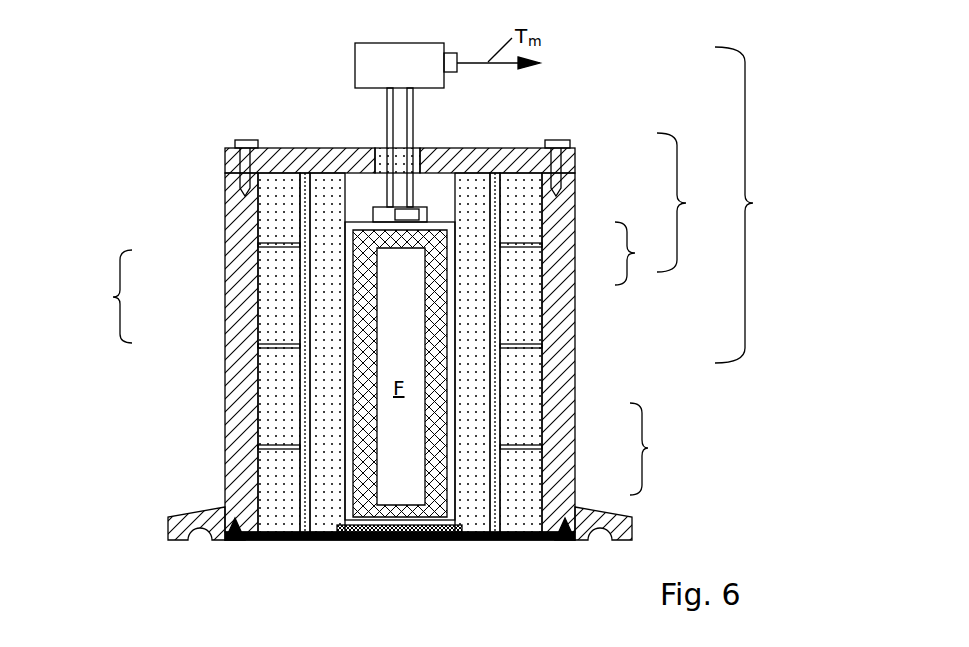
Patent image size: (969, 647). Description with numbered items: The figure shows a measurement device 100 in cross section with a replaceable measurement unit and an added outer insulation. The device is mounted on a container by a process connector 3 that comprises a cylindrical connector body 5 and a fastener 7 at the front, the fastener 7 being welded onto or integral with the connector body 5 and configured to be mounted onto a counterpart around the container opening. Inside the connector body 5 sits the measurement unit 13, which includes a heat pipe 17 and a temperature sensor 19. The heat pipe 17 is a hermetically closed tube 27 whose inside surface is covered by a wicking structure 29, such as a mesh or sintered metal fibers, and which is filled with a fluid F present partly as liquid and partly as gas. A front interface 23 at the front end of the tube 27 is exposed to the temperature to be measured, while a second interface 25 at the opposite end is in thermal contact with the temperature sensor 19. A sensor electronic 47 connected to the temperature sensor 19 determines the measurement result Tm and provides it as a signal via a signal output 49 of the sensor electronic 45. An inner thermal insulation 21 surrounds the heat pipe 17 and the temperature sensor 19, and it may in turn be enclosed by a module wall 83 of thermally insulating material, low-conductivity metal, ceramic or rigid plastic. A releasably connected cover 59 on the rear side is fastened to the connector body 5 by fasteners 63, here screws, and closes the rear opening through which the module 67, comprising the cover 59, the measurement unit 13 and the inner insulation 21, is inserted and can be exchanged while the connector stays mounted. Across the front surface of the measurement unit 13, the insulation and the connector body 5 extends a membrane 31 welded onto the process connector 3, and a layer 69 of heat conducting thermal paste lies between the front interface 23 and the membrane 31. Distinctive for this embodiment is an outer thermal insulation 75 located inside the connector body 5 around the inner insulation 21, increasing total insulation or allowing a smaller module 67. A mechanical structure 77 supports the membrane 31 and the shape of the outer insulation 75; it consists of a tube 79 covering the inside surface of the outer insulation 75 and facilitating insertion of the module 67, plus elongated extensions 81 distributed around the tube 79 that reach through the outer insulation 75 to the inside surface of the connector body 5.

The process connector 3 is at (653, 449).
The connector body 5 is at (552, 472).
The fastener 7 is at (578, 510).
The measurement unit 13 is at (690, 202).
The heat pipe 17 is at (640, 253).
The temperature sensor 19 is at (407, 215).
The thermal insulation 21 is at (467, 405).
The front interface 23 is at (420, 533).
The second interface 25 is at (395, 220).
The tube 27 is at (452, 296).
The wicking structure 29 is at (458, 318).
The membrane 31 is at (318, 540).
The sensor electronic 45 is at (386, 127).
The sensor electronic 47 is at (399, 65).
The signal output 49 is at (452, 62).
The cover 59 is at (457, 168).
The fasteners 63 is at (240, 143).
The module 67 is at (751, 205).
The layer of heat conducting thermal paste 69 is at (380, 538).
The outer thermal insulation 75 is at (280, 478).
The mechanical structure 77 is at (105, 296).
The tube 79 is at (297, 220).
The elongated extensions 81 is at (279, 443).
The module wall 83 is at (497, 357).
The measurement device 100 is at (122, 145).